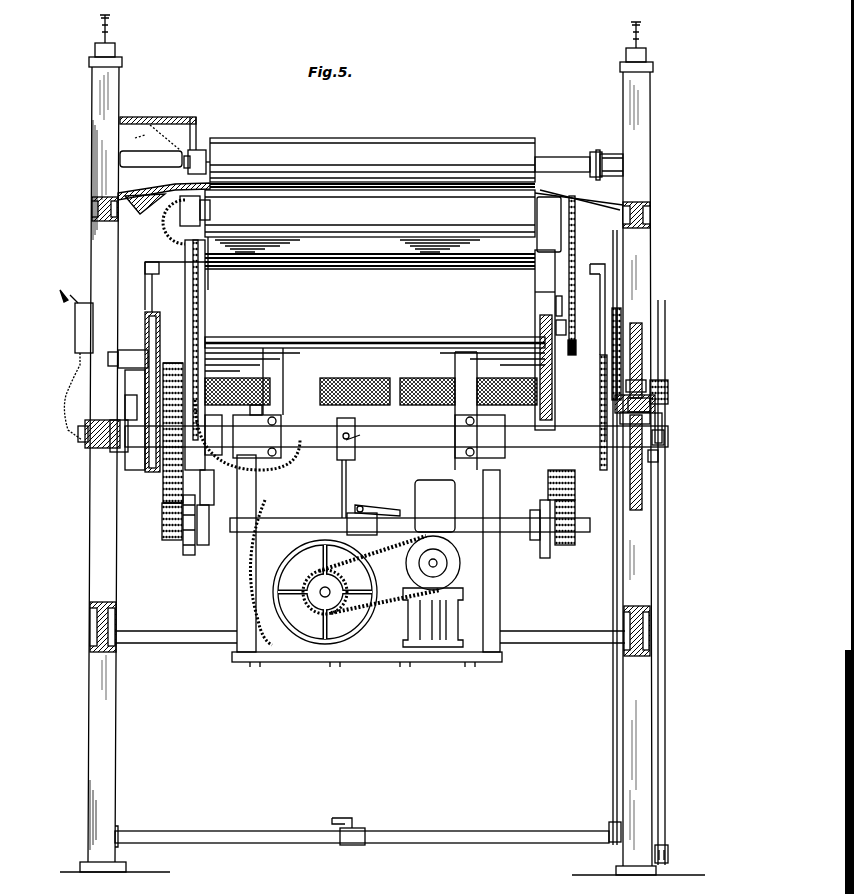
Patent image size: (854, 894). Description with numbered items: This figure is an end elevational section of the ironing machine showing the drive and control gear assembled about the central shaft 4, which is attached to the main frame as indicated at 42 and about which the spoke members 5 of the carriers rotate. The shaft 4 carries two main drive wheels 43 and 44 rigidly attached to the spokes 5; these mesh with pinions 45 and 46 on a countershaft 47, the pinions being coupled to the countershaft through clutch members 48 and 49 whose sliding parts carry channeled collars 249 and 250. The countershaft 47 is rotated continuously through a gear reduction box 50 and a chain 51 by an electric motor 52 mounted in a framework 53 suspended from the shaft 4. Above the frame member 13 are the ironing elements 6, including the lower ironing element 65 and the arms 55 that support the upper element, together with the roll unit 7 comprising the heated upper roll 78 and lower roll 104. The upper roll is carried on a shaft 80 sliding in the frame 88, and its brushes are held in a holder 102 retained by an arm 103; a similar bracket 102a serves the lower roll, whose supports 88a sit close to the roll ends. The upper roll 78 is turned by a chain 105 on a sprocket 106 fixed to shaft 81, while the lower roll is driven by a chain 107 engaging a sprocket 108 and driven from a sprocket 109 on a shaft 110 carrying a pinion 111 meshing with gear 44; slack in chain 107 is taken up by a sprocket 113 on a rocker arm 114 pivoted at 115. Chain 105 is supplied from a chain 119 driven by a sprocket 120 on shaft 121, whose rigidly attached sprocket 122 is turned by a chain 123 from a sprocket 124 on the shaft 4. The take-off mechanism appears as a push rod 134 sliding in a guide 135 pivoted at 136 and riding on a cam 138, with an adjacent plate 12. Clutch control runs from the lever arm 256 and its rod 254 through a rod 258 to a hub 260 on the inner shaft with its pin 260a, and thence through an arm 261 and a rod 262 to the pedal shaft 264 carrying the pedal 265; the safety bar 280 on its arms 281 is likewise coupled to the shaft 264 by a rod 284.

The frame 88 is at (112, 80).
The arm 103 is at (195, 108).
The brush holder 102 is at (200, 150).
The shaft 80 is at (155, 158).
The roller unit 7 is at (430, 128).
The upper roll 78 is at (372, 162).
The lower roll 104 is at (370, 213).
The sprocket 106 is at (598, 150).
The shaft 81 is at (562, 165).
The chain 105 is at (613, 150).
The sprocket 108 is at (595, 185).
The arms 55 is at (160, 215).
The bracket 102a is at (178, 228).
The chain 107 is at (576, 253).
The arms 281 is at (152, 290).
The spoke members 5 is at (160, 322).
The supports 88a is at (205, 275).
The bar 280 is at (245, 270).
The ironing elements 6 is at (332, 276).
The lower ironing element 65 is at (432, 270).
The frame 13 is at (328, 322).
The pivot means 115 is at (535, 292).
The pinion 111 is at (556, 306).
The shaft 110 is at (556, 328).
The sprocket 109 is at (576, 346).
The rocker arm 114 is at (616, 300).
The sprocket 113 is at (620, 312).
The chain 119 is at (643, 328).
The second sprocket 122 is at (646, 386).
The shaft 121 is at (650, 403).
The sprocket 120 is at (668, 388).
The chain 123 is at (650, 414).
The second arm 261 is at (664, 430).
The frame attachment 42 is at (92, 442).
The sprocket 124 is at (658, 458).
The push rod 134 is at (110, 335).
The pivot 136 is at (108, 360).
The guide 135 is at (118, 368).
The plate 12 is at (75, 395).
The cam 138 is at (130, 482).
The main drive wheel 43 is at (165, 512).
The pinion 45 is at (173, 542).
The clutch member 48 is at (188, 556).
The countershaft 47 is at (205, 545).
The channeled collar 250 is at (205, 548).
The framework 53 is at (248, 595).
The hub 260 is at (346, 418).
The pin 260a is at (360, 466).
The rod 258 is at (342, 490).
The central shaft 4 is at (400, 482).
The rod 254 is at (420, 488).
The lever arm 256 is at (380, 492).
The gear reduction box 50 is at (435, 506).
The main drive wheel 44 is at (575, 505).
The pinion 46 is at (565, 546).
The clutch member 49 is at (546, 560).
The channeled collar 249 is at (533, 542).
The chain 51 is at (400, 600).
The electric motor 52 is at (322, 652).
The rod 284 is at (612, 725).
The rod 262 is at (665, 710).
The pedal 265 is at (340, 815).
The shaft 264 is at (480, 805).